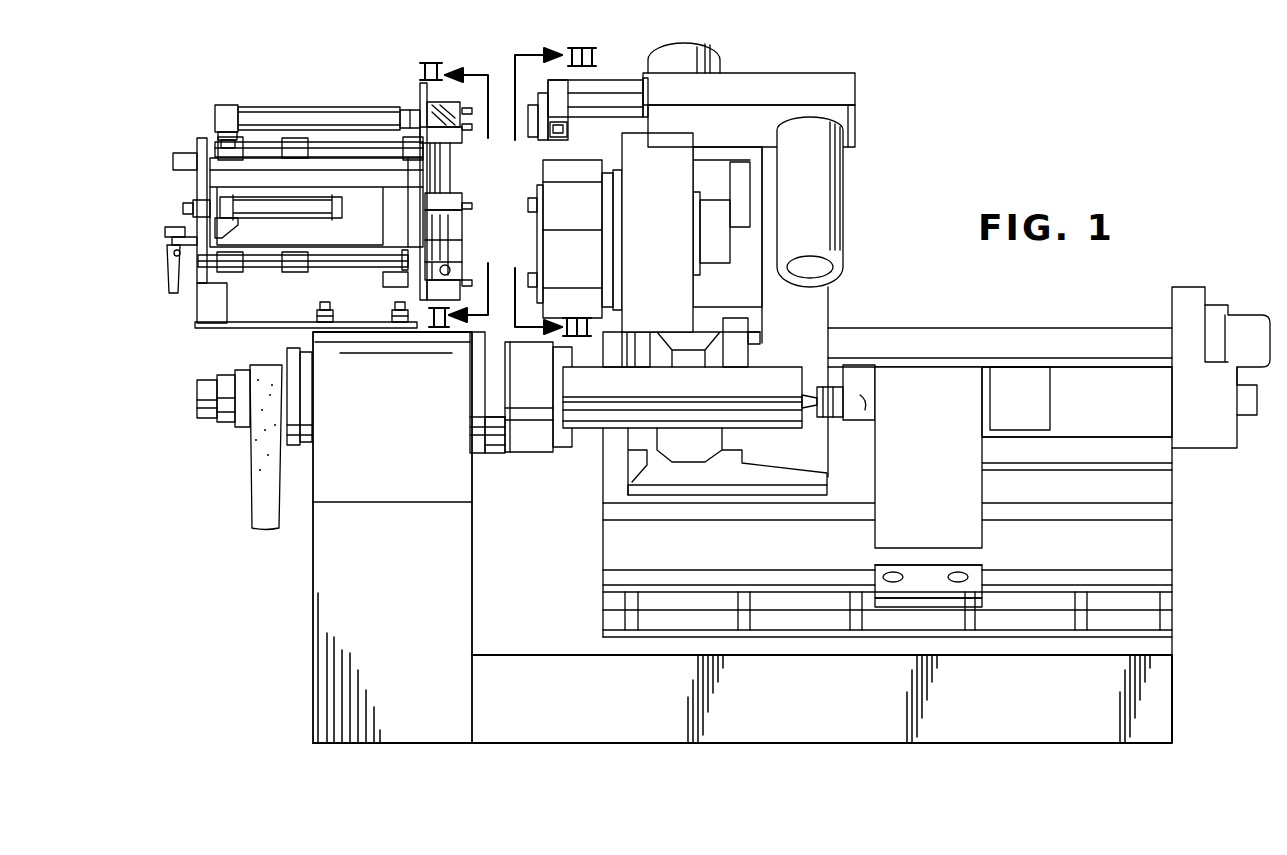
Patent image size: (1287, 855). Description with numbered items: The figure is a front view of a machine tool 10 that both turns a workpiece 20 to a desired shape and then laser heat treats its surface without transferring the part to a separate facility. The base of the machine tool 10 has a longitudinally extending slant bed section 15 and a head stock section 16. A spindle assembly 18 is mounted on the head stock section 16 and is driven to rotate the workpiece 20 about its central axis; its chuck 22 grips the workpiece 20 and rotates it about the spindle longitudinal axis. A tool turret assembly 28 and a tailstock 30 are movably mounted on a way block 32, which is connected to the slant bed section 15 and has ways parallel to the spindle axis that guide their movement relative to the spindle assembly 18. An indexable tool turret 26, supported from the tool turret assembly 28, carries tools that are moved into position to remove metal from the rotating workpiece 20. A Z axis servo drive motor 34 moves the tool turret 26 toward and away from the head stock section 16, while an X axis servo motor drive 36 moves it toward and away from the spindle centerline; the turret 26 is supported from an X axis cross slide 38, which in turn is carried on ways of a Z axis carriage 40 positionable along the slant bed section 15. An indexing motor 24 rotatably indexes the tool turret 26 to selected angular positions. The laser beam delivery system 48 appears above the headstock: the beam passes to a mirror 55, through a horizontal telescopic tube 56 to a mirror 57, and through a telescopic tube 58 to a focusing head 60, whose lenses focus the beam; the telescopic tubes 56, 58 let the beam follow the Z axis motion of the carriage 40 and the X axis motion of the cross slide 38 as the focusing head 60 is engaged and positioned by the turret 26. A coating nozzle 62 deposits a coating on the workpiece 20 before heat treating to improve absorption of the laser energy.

The machine tool 10 is at (1020, 315).
The slant bed section 15 is at (540, 643).
The head stock section 16 is at (335, 572).
The spindle assembly 18 is at (502, 433).
The workpiece 20 is at (588, 433).
The chuck 22 is at (537, 432).
The indexing motor 24 is at (708, 255).
The tool turret 26 is at (562, 170).
The tool turret assembly 28 is at (773, 73).
The tailstock 30 is at (922, 383).
The way block 32 is at (1163, 487).
The Z axis servo drive motor 34 is at (1243, 333).
The X axis servo motor drive 36 is at (830, 197).
The X axis cross slide 38 is at (747, 277).
The Z axis carriage 40 is at (817, 308).
The feed mechanism 48 is at (337, 192).
The mirror 55 is at (224, 108).
The telescopic tube 56 is at (285, 110).
The mirror 57 is at (423, 107).
The telescopic tube 58 is at (450, 178).
The focusing head 60 is at (405, 293).
The coating nozzle 62 is at (460, 287).